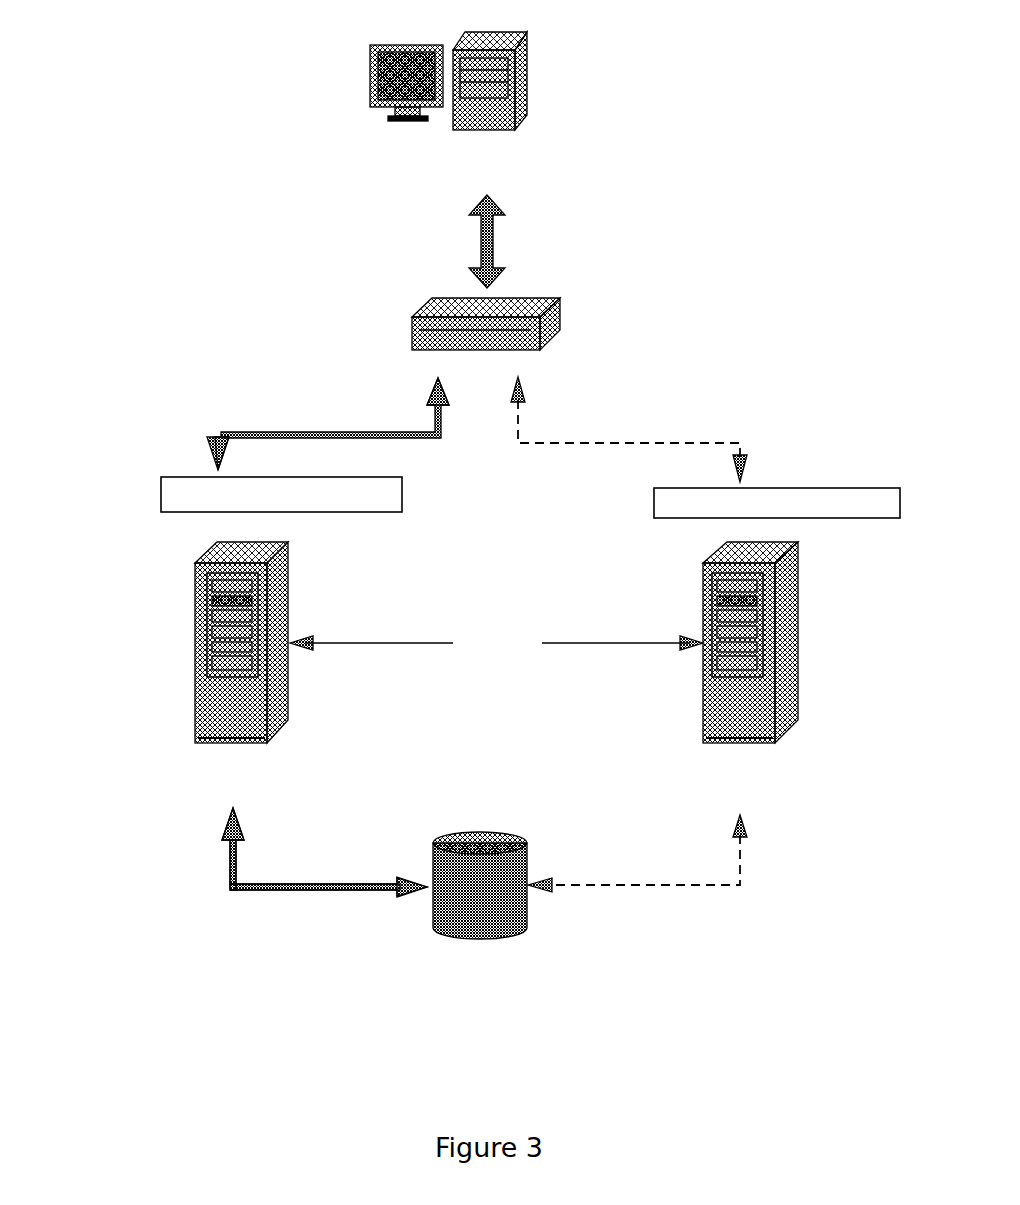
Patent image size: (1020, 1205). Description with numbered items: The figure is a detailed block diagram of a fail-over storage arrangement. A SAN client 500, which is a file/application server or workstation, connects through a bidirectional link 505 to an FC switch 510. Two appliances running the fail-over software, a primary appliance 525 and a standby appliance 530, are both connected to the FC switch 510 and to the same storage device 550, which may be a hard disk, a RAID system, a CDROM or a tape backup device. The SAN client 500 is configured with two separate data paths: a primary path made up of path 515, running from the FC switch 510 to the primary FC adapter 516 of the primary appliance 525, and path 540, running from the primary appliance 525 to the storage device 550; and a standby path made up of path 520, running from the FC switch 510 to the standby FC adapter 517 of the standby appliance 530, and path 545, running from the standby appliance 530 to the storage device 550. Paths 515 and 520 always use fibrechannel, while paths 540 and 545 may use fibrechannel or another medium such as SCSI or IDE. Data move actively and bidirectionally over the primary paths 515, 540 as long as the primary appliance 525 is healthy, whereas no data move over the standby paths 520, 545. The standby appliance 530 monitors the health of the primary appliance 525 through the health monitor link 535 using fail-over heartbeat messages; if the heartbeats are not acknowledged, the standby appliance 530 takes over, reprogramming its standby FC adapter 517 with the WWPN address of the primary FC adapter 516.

The SAN client 500 is at (515, 100).
The bidirectional link between SAN client and FC switch 505 is at (550, 235).
The FC switch 510 is at (536, 309).
The primary data path 515 is at (323, 424).
The primary FC adapter 516 is at (232, 465).
The standby FC adapter 517 is at (782, 488).
The standby path 520 is at (629, 429).
The primary appliance 525 is at (196, 659).
The standby appliance 530 is at (777, 672).
The health monitor link 535 is at (496, 607).
The primary data path 540 is at (253, 850).
The standby path 545 is at (748, 847).
The storage device 550 is at (492, 927).